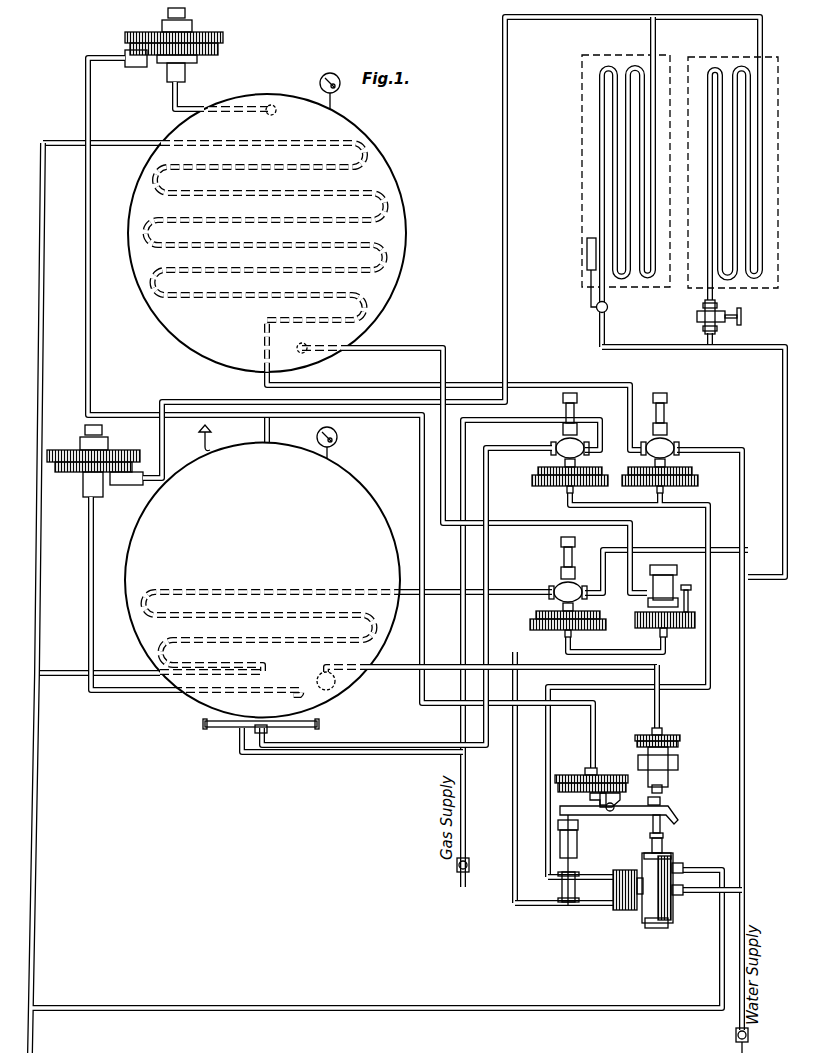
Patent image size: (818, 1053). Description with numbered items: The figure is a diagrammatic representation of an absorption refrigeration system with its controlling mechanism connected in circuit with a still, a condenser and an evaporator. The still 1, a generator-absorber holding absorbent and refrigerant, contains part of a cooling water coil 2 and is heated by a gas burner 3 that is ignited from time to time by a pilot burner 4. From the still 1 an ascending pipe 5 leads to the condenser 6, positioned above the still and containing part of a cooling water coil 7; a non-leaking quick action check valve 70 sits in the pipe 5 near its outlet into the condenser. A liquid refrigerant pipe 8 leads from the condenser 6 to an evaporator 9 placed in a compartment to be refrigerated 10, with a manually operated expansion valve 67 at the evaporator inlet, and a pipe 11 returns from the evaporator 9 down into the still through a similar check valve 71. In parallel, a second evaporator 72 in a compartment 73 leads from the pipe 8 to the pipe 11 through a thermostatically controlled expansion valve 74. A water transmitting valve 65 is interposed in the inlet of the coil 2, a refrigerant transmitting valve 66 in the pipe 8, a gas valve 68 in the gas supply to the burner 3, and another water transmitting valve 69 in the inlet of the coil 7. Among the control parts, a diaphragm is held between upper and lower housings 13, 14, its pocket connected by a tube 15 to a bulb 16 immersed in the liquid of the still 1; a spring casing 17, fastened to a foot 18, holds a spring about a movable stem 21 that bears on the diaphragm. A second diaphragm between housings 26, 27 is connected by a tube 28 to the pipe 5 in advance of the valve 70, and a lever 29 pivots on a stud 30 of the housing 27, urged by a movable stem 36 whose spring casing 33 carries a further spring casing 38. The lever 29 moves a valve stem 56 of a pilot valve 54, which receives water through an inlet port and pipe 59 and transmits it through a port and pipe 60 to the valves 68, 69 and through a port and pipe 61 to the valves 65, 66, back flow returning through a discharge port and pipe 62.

The still 1 is at (384, 514).
The cooling water coil 2 is at (242, 614).
The gas burner 3 is at (215, 730).
The pilot burner 4 is at (253, 755).
The pipe 5 is at (238, 103).
The condenser 6 is at (404, 207).
The cooling water coil 7 is at (234, 300).
The liquid refrigerant pipe 8 is at (405, 347).
The evaporator 9 is at (762, 160).
The compartment to be refrigerated 10 is at (733, 161).
The pipe 11 is at (608, 20).
The upper housing 13 is at (688, 736).
The lower housing 14 is at (682, 743).
The tube 15 is at (660, 714).
The bulb 16 is at (321, 677).
The spring casing 17 is at (663, 786).
The foot 18 is at (670, 762).
The movable stem 21 is at (662, 800).
The upper housing 26 is at (553, 776).
The lower housing 27 is at (585, 795).
The tube 28 is at (392, 420).
The lever 29 is at (636, 816).
The stud 30 is at (608, 812).
The spring casing 33 is at (560, 845).
The movable stem 36 is at (558, 824).
The spring casing 38 is at (560, 884).
The pilot valve 54 is at (648, 908).
The valve stem 56 is at (664, 830).
The inlet port and pipe 59 is at (716, 895).
The port and pipe 60 is at (588, 877).
The port and pipe 61 is at (590, 907).
The discharge port and pipe 62 is at (297, 1006).
The water transmitting valve 65 is at (535, 625).
The refrigerant transmitting valve 66 is at (678, 637).
The manually operated expansion valve 67 is at (717, 325).
The gas valve 68 is at (540, 488).
The water transmitting valve 69 is at (700, 484).
The check valve 70 is at (224, 41).
The check valve 71 is at (120, 452).
The evaporator 72 is at (600, 185).
The compartment 73 is at (580, 130).
The thermostatically controlled expansion valve 74 is at (607, 310).